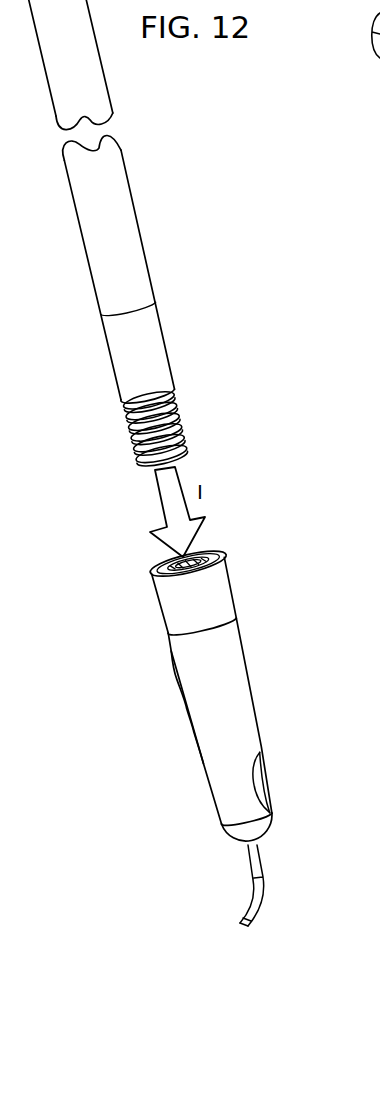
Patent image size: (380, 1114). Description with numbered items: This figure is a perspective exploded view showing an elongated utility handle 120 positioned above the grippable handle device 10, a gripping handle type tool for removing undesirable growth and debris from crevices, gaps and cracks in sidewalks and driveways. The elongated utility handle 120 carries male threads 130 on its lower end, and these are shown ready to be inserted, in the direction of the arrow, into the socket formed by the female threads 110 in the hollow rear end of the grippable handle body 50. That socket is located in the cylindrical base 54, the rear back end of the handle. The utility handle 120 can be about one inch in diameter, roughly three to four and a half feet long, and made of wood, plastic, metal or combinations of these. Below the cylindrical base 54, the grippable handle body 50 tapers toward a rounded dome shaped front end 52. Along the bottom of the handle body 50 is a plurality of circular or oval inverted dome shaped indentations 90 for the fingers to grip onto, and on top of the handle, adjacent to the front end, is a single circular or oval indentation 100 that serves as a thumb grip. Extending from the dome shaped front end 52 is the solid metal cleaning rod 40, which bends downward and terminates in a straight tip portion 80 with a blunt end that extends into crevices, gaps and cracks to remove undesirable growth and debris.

The gripping handle type tool 10 is at (260, 625).
The metal cleaning rod 40 is at (257, 857).
The grippable handle body 50 is at (243, 687).
The rounded dome shaped front end 52 is at (258, 828).
The cylindrical base 54 is at (222, 585).
The straight tip portion 80 is at (247, 912).
The plurality of circular or oval indentations 90 is at (178, 687).
The single circular or oval indentation 100 is at (262, 790).
The female threads 110 is at (170, 560).
The elongated utility handle 120 is at (123, 239).
The male threads 130 is at (177, 427).